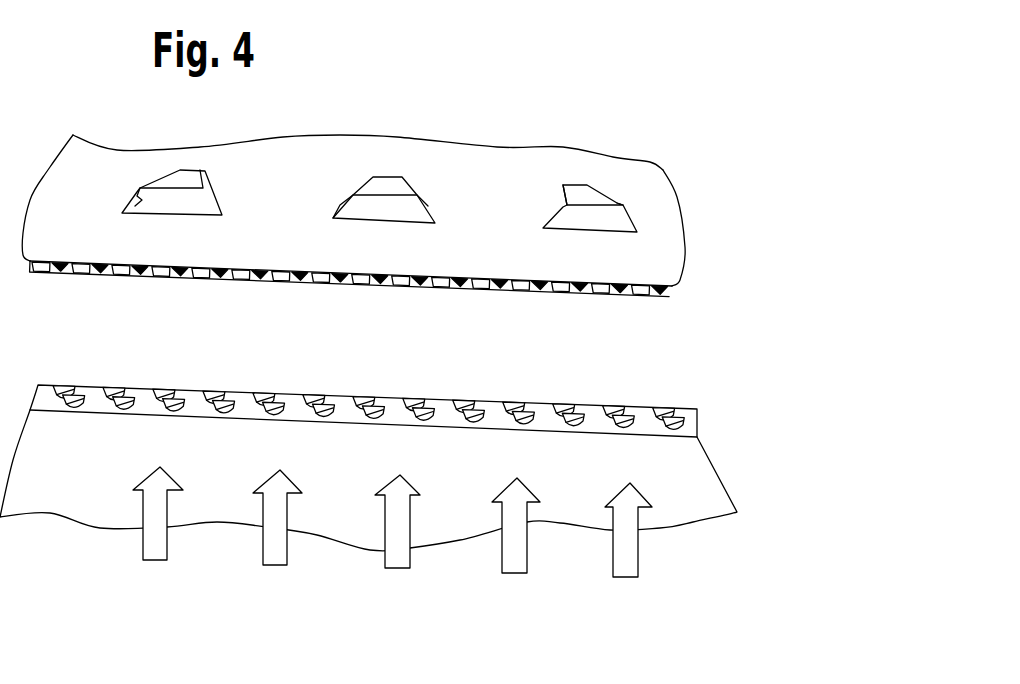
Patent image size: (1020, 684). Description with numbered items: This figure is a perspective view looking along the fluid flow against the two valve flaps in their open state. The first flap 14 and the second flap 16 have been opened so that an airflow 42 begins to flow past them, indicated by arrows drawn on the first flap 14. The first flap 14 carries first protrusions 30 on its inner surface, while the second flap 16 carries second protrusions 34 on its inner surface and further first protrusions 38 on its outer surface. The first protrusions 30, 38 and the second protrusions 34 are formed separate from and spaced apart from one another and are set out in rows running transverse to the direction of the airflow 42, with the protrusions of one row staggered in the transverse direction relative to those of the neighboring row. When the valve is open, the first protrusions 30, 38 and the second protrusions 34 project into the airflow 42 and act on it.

The first flap 14 is at (685, 505).
The second flap 16 is at (655, 185).
The first protrusions 30 is at (615, 405).
The second protrusions 34 is at (392, 185).
The first protrusions 38 is at (608, 288).
The airflow 42 is at (157, 552).